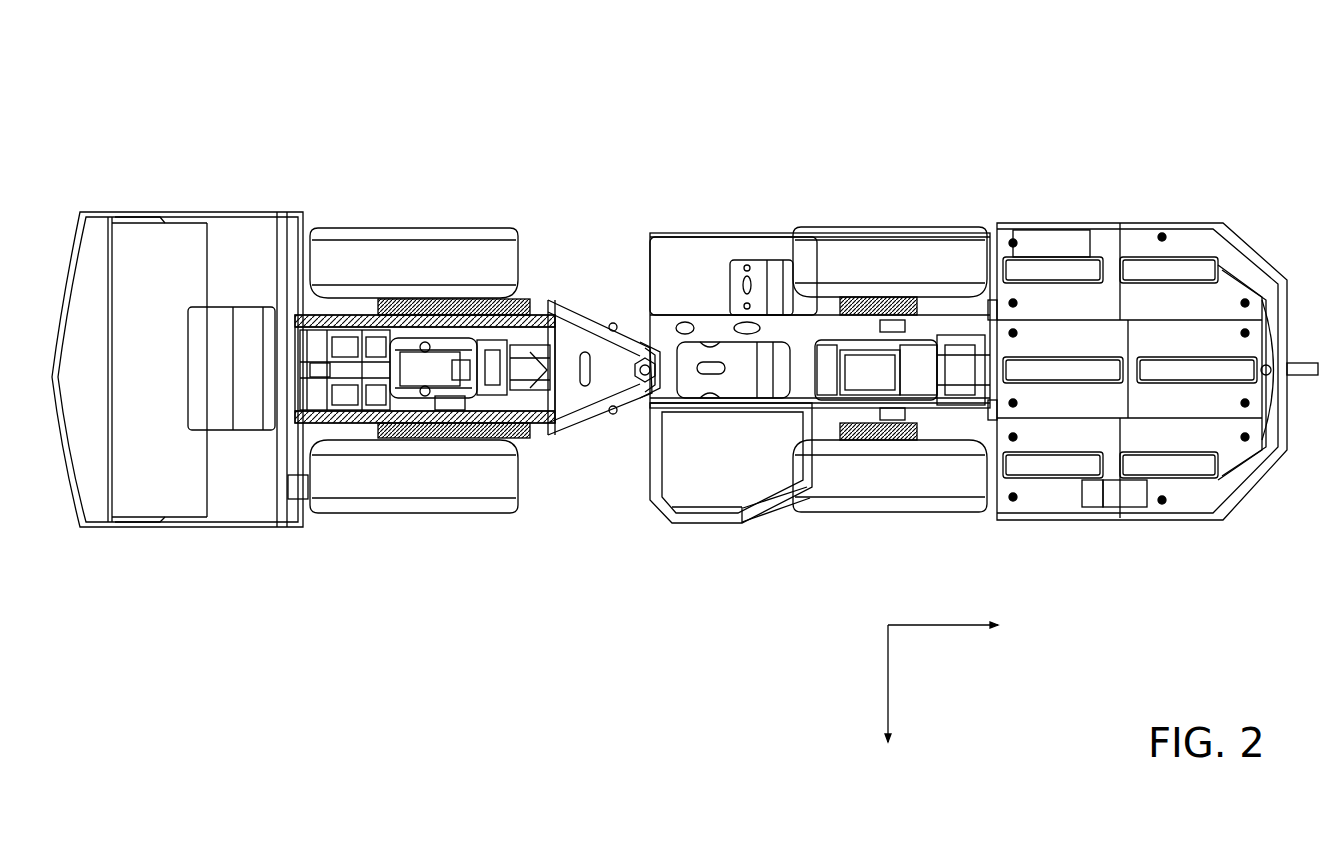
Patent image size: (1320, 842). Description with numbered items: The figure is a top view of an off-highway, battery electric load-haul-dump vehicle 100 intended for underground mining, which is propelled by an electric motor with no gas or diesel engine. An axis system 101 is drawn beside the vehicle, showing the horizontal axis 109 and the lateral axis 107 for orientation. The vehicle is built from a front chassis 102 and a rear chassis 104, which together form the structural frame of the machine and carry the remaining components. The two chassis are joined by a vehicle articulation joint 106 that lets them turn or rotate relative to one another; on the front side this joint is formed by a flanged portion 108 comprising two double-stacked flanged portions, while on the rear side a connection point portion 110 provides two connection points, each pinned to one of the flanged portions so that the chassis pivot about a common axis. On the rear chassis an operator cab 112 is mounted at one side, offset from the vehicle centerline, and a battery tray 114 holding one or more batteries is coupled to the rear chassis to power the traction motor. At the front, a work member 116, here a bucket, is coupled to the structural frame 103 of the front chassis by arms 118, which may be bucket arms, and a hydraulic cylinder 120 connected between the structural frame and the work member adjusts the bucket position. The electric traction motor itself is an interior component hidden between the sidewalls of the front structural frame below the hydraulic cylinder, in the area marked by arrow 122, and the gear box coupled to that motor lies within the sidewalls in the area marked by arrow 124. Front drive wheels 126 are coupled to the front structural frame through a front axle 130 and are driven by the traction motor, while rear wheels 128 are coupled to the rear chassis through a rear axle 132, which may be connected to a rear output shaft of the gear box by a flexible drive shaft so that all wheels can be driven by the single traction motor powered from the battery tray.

The load-haul-dump vehicle 100 is at (1172, 70).
The axis system 101 is at (1030, 638).
The front chassis 102 is at (545, 267).
The structural frame 103 is at (395, 340).
The rear chassis 104 is at (738, 205).
The vehicle articulation joint 106 is at (637, 313).
The lateral axis 107 is at (887, 680).
The flanged portion 108 is at (605, 350).
The horizontal axis 109 is at (920, 625).
The connection point portion 110 is at (652, 387).
The operator cab 112 is at (715, 473).
The battery tray 114 is at (1163, 193).
The work member 116 is at (133, 245).
The arms 118 is at (505, 315).
The hydraulic cylinder 120 is at (417, 365).
The arrow 122 is at (447, 397).
The arrow 124 is at (537, 385).
The front drive wheels 126 is at (350, 255).
The rear wheels 128 is at (918, 247).
The front axle 130 is at (425, 345).
The rear axle 132 is at (867, 300).